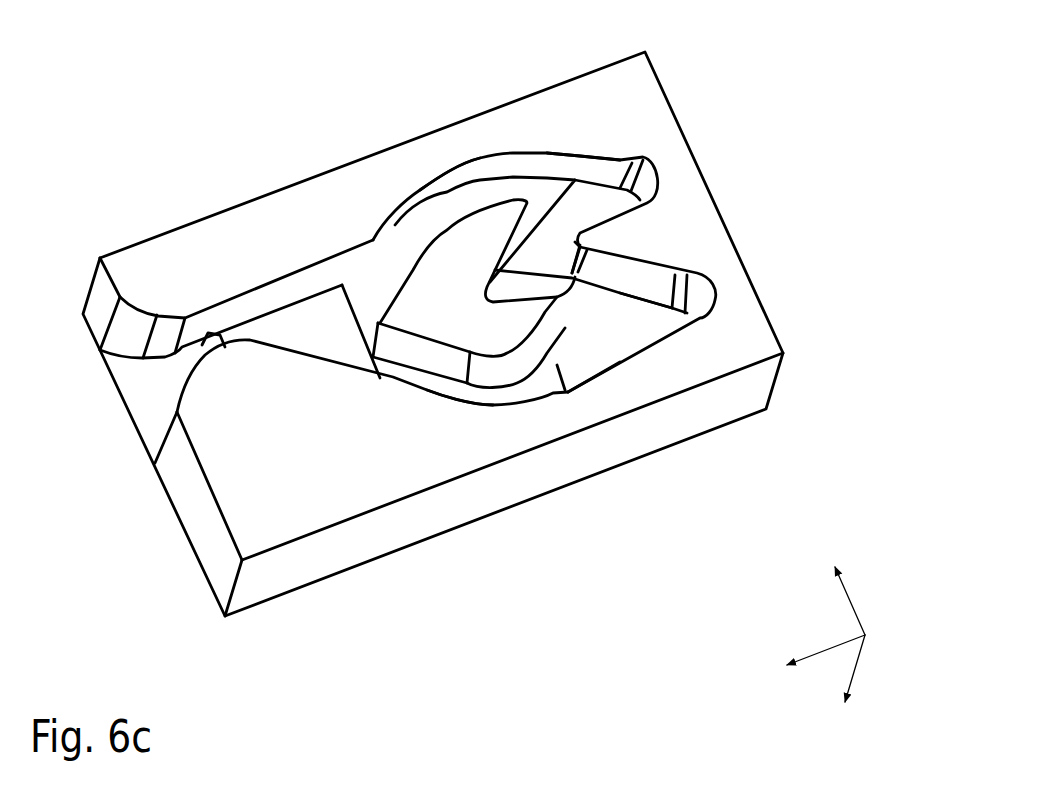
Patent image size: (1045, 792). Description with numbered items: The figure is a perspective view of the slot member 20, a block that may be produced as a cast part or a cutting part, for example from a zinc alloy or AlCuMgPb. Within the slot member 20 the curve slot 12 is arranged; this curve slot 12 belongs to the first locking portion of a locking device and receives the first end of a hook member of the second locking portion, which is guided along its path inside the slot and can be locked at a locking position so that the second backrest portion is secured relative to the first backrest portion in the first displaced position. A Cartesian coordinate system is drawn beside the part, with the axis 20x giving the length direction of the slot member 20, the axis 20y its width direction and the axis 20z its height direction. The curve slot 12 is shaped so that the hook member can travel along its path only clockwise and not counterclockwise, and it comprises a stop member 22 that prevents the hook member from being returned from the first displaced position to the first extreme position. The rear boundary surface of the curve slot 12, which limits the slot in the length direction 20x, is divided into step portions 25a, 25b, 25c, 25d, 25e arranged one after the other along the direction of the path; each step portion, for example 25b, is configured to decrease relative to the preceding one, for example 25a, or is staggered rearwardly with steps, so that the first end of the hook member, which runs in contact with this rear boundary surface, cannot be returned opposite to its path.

The slot member 20 is at (378, 168).
The curve slot 12 is at (328, 322).
The stop member 22 is at (610, 244).
The step portion 25a is at (485, 185).
The step portion 25b is at (553, 190).
The step portion 25c is at (600, 320).
The step portion 25d is at (600, 367).
The step portion 25e is at (527, 390).
The axis in length direction 20x is at (857, 673).
The axis in width direction 20y is at (830, 647).
The axis in height direction 20z is at (857, 605).